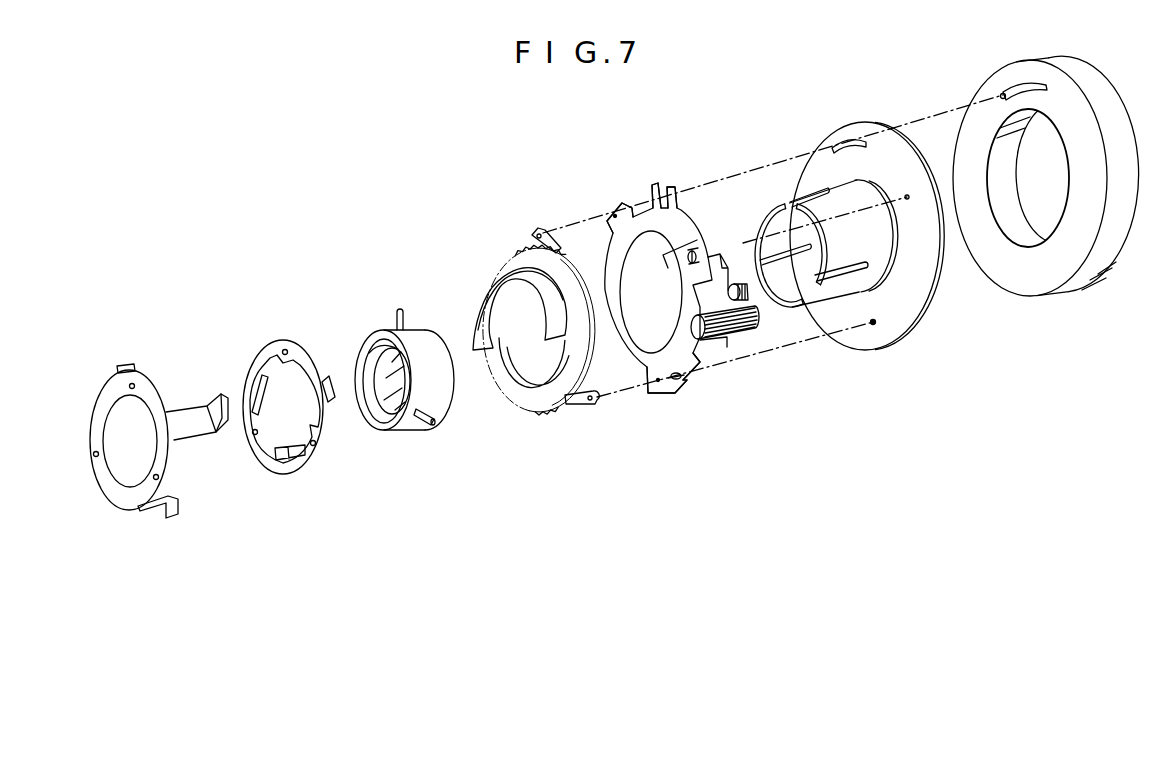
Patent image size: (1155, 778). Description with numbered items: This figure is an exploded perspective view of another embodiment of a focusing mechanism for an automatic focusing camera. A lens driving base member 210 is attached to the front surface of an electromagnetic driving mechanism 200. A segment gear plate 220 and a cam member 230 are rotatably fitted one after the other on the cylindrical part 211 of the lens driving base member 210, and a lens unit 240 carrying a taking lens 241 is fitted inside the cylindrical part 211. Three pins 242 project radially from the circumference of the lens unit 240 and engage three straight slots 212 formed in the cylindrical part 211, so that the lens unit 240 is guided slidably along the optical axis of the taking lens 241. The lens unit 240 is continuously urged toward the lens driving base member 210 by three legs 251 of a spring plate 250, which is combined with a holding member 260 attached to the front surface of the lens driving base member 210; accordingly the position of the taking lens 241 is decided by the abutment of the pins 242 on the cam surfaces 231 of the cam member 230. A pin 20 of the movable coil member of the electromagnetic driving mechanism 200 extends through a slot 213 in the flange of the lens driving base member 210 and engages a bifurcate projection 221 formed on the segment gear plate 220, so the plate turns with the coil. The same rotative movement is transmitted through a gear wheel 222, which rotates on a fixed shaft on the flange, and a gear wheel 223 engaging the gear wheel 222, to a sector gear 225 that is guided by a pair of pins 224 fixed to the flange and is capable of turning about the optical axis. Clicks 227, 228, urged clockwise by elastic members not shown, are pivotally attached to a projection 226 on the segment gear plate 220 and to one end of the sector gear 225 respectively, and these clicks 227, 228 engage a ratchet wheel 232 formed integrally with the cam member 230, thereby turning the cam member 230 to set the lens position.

The pin 20 is at (1003, 92).
The electromagnetic driving mechanism 200 is at (1062, 298).
The lens driving base member 210 is at (887, 353).
The cylindrical part 211 is at (776, 203).
The straight slots 212 is at (805, 306).
The slot 213 is at (851, 139).
The segment gear plate 220 is at (691, 401).
The bifurcate projection 221 is at (662, 183).
The gear wheel 222 is at (736, 283).
The gear wheel 223 is at (751, 327).
The pins 224 is at (679, 387).
The sector gear 225 is at (703, 364).
The projection 226 is at (619, 210).
The click 227 is at (536, 229).
The click 228 is at (592, 404).
The cam member 230 is at (557, 419).
The cam surfaces 231 is at (480, 330).
The ratchet wheel 232 is at (586, 272).
The lens unit 240 is at (425, 449).
The taking lens 241 is at (384, 352).
The pins 242 is at (402, 308).
The spring plate 250 is at (297, 491).
The legs 251 is at (333, 397).
The holding member 260 is at (152, 536).